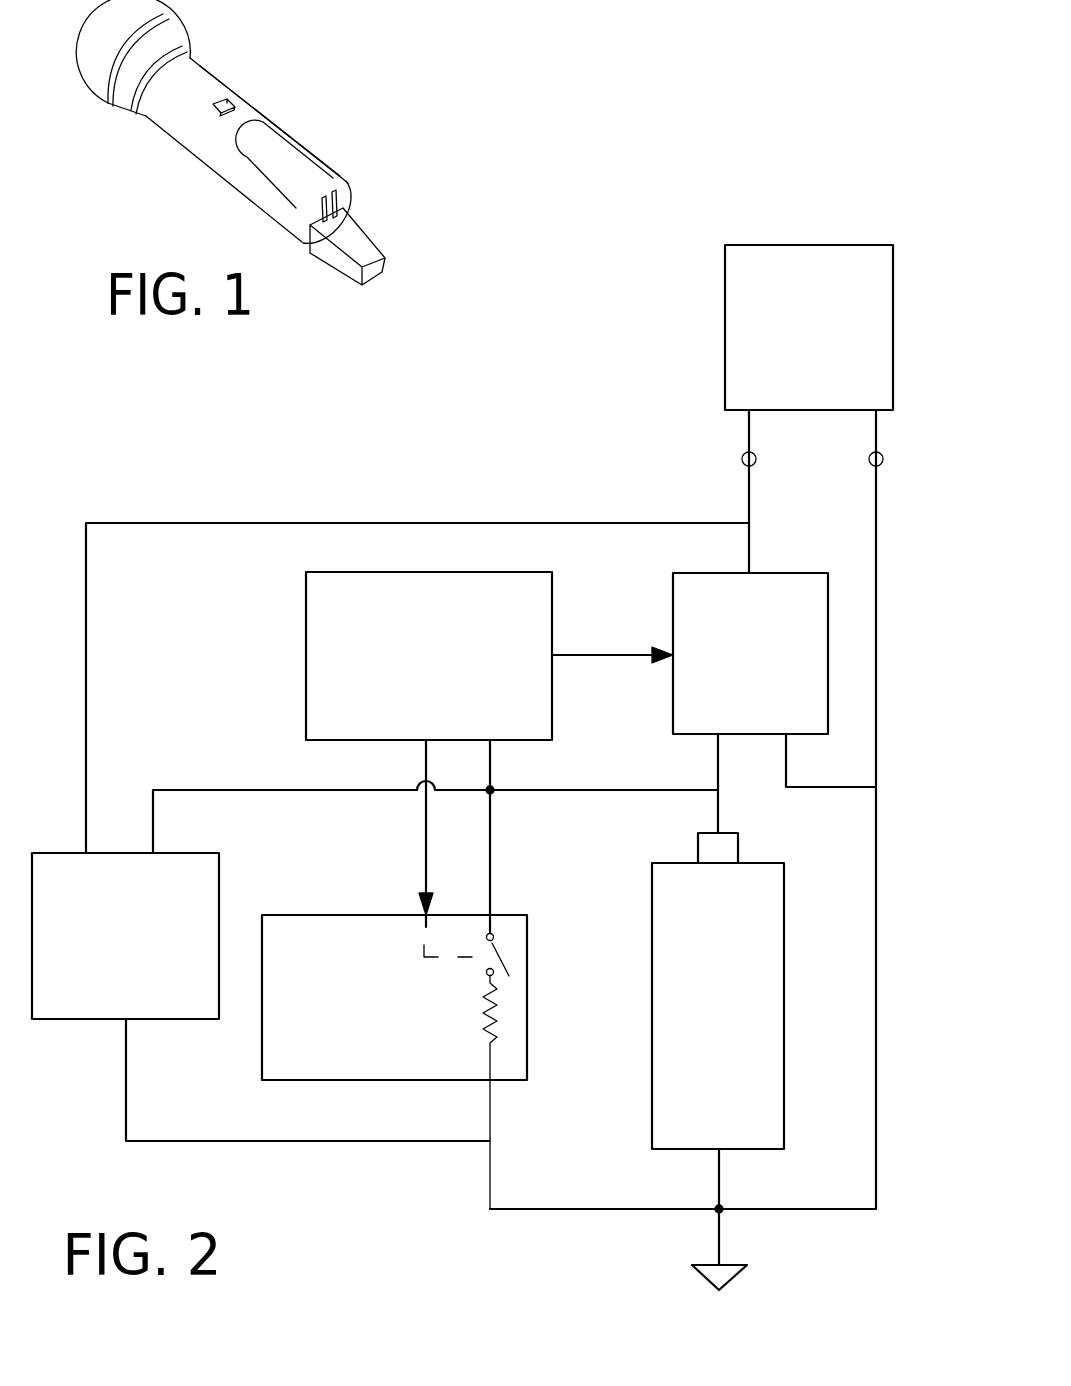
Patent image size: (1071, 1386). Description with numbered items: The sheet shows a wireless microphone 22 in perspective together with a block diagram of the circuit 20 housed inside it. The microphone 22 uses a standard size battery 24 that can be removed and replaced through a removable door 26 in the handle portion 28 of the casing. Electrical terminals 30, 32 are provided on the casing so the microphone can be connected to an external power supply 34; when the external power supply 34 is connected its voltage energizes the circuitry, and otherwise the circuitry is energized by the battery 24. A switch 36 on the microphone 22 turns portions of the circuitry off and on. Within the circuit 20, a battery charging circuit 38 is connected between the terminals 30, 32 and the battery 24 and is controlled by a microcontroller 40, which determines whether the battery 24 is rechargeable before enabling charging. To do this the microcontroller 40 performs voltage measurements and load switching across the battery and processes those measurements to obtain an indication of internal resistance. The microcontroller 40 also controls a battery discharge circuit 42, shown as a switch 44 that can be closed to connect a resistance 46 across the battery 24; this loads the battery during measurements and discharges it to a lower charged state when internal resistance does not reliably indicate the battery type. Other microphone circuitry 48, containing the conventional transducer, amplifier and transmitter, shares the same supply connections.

In FIG. 2, the circuit 20 is at (600, 415).
In FIG. 1, the wireless microphone 22 is at (295, 62).
In FIG. 2, the battery 24 is at (759, 948).
In FIG. 1, the removable door 26 is at (283, 150).
In FIG. 1, the handle portion 28 is at (213, 142).
In FIG. 1, the electrical terminal 30 is at (323, 197).
In FIG. 2, the electrical terminal 30 is at (742, 463).
In FIG. 1, the electrical terminal 32 is at (340, 193).
In FIG. 2, the electrical terminal 32 is at (868, 459).
In FIG. 2, the external power supply 34 is at (808, 253).
In FIG. 1, the switch 36 is at (223, 110).
In FIG. 2, the battery charging circuit 38 is at (682, 612).
In FIG. 2, the microcontroller 40 is at (305, 643).
In FIG. 2, the battery discharge circuit 42 is at (278, 1038).
In FIG. 2, the switch 44 is at (497, 955).
In FIG. 2, the resistance 46 is at (498, 1032).
In FIG. 2, the other microphone circuitry 48 is at (203, 900).